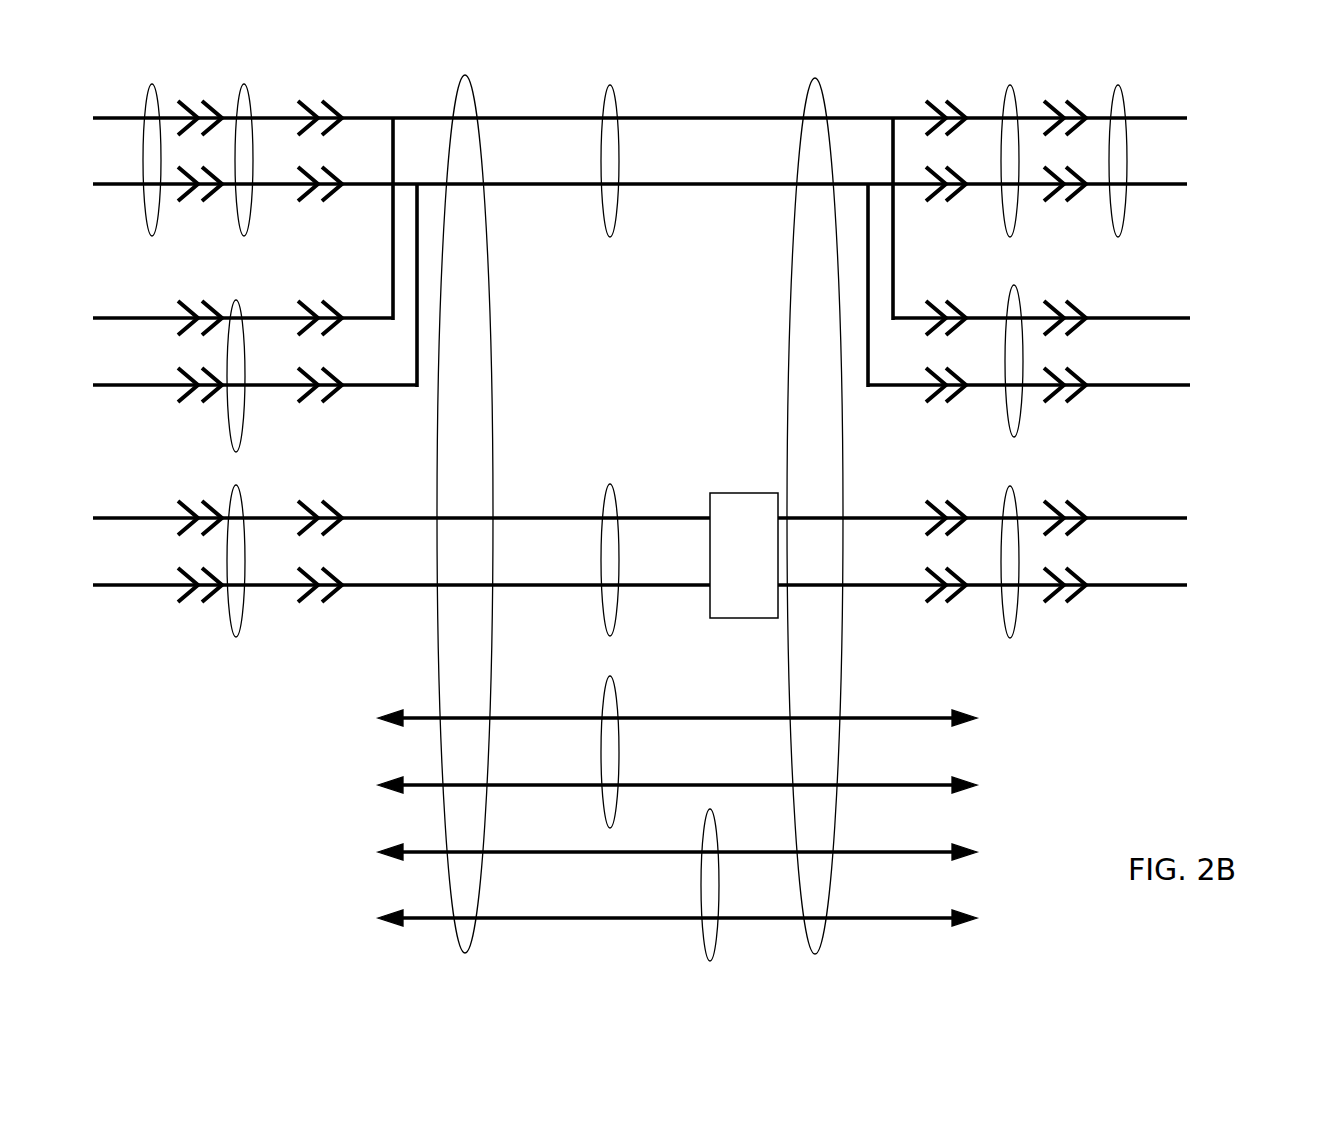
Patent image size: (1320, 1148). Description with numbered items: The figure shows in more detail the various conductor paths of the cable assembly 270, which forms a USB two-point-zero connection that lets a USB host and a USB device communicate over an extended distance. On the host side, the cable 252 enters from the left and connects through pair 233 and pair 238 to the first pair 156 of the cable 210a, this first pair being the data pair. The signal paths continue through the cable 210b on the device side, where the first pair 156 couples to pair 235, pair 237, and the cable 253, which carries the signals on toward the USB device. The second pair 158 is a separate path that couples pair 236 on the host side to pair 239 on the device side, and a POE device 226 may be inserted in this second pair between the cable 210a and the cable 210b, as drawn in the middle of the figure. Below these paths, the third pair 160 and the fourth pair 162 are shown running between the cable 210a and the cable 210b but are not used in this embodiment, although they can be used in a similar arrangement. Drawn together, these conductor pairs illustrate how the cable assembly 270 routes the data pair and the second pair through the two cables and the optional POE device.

The cable assembly 270 is at (1226, 104).
The cable 252 is at (156, 88).
The pair 233 is at (248, 88).
The cable 210a is at (468, 88).
The pair 1 156 is at (613, 90).
The cable 210b is at (820, 90).
The pair 235 is at (1029, 80).
The cable 253 is at (1122, 100).
The pair 237 is at (1031, 280).
The pair 238 is at (255, 295).
The pair 236 is at (255, 487).
The pair 2 158 is at (620, 505).
The POE device 226 is at (744, 555).
The pair 239 is at (1035, 490).
The pair 3 160 is at (640, 690).
The pair 4 162 is at (740, 823).